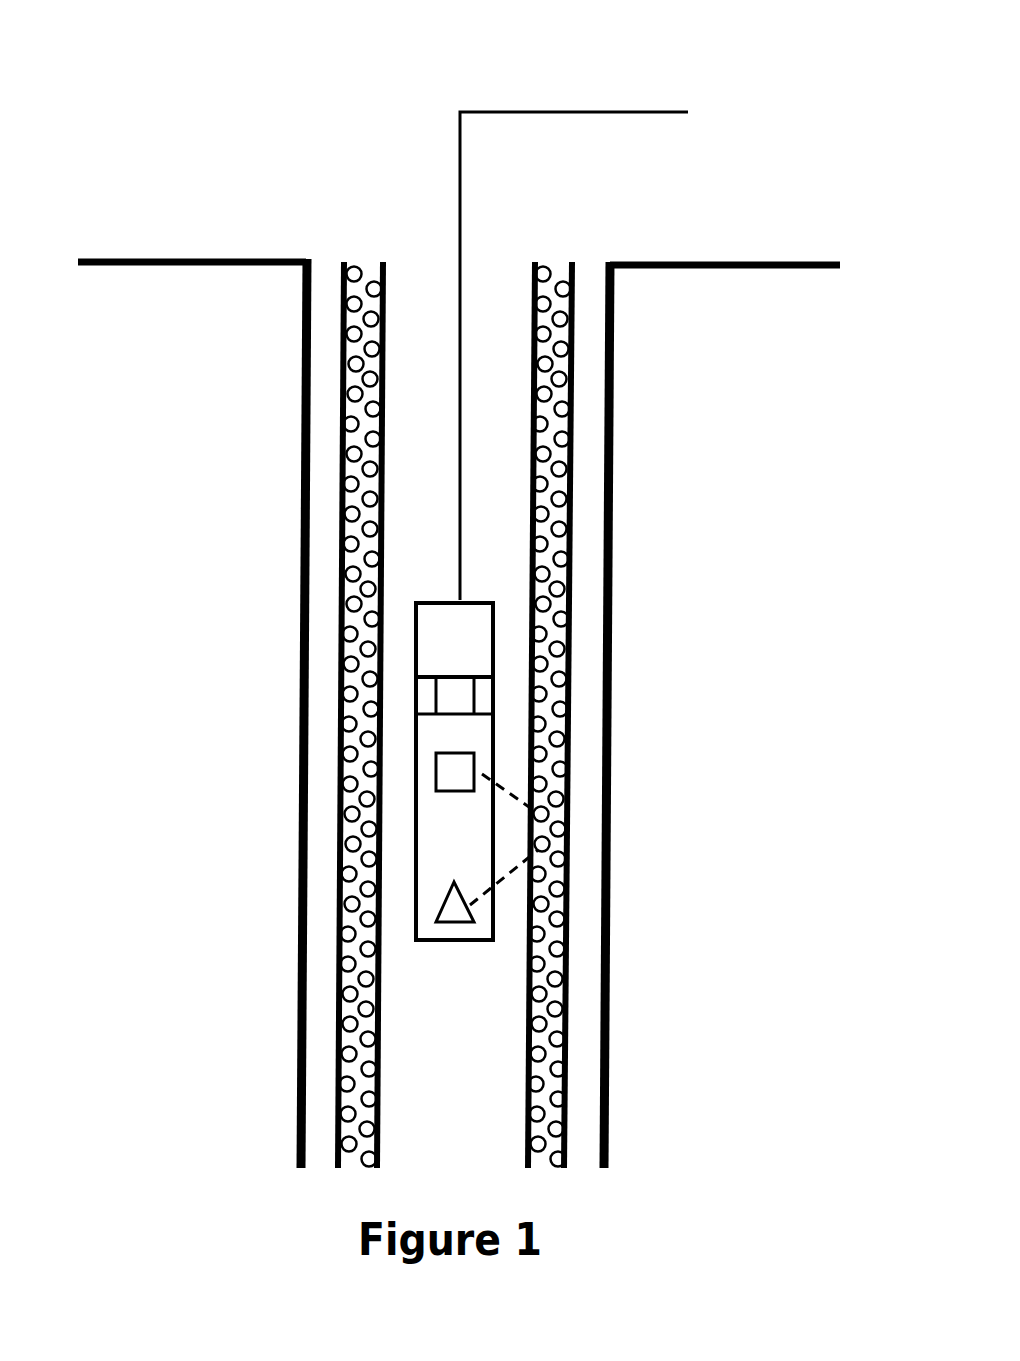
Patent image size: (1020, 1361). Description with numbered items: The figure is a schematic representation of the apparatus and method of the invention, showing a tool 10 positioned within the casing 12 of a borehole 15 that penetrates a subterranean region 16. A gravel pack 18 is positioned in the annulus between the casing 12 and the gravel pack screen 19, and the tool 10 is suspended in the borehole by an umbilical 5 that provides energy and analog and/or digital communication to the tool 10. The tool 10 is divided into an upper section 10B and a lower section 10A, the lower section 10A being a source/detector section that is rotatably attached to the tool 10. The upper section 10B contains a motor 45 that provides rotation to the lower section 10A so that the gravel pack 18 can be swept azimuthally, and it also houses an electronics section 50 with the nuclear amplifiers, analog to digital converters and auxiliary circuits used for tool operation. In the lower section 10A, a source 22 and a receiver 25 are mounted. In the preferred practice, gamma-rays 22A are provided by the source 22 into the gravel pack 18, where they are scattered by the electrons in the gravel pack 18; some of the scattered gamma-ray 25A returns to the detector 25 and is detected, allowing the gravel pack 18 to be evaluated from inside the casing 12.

The umbilical 5 is at (497, 112).
The tool 10 is at (428, 581).
The lower section 10A is at (440, 836).
The upper section 10B is at (440, 661).
The casing 12 is at (343, 262).
The borehole 15 is at (603, 247).
The subterranean region 16 is at (232, 352).
The gravel pack 18 is at (365, 258).
The gravel pack screen 19 is at (530, 395).
The source 22 is at (455, 765).
The gamma-rays 22A is at (560, 800).
The receiver 25 is at (450, 905).
The gamma-ray 25A is at (560, 876).
The motor 45 is at (455, 697).
The electronics section 50 is at (478, 650).